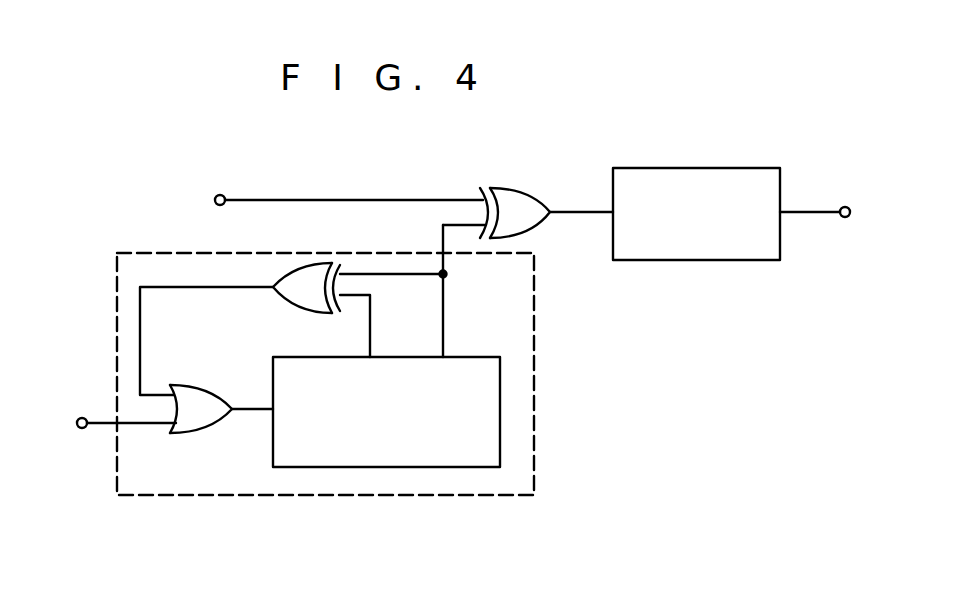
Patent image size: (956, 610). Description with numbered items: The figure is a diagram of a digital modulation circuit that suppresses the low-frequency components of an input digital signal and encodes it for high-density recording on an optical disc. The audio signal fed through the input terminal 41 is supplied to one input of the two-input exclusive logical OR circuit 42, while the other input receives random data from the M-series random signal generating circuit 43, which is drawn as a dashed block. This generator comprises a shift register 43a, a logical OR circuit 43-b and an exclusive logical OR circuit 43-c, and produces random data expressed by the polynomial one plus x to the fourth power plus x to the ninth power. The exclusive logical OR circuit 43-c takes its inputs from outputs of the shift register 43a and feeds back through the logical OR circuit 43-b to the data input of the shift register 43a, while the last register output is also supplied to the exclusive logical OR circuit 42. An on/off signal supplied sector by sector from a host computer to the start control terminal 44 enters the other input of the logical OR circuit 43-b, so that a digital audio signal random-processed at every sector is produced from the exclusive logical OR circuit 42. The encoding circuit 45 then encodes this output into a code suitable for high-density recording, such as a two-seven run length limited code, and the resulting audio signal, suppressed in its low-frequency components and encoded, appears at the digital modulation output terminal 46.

The input terminal 41 is at (220, 194).
The exclusive logical OR circuit 42 is at (533, 188).
The M-series random signal generating circuit 43 is at (488, 495).
The shift register 43a is at (475, 357).
The logical OR circuit 43-b is at (193, 434).
The exclusive logical OR circuit 43-c is at (282, 302).
The start control terminal 44 is at (78, 418).
The encoding circuit 45 is at (780, 172).
The digital modulation output terminal 46 is at (849, 206).